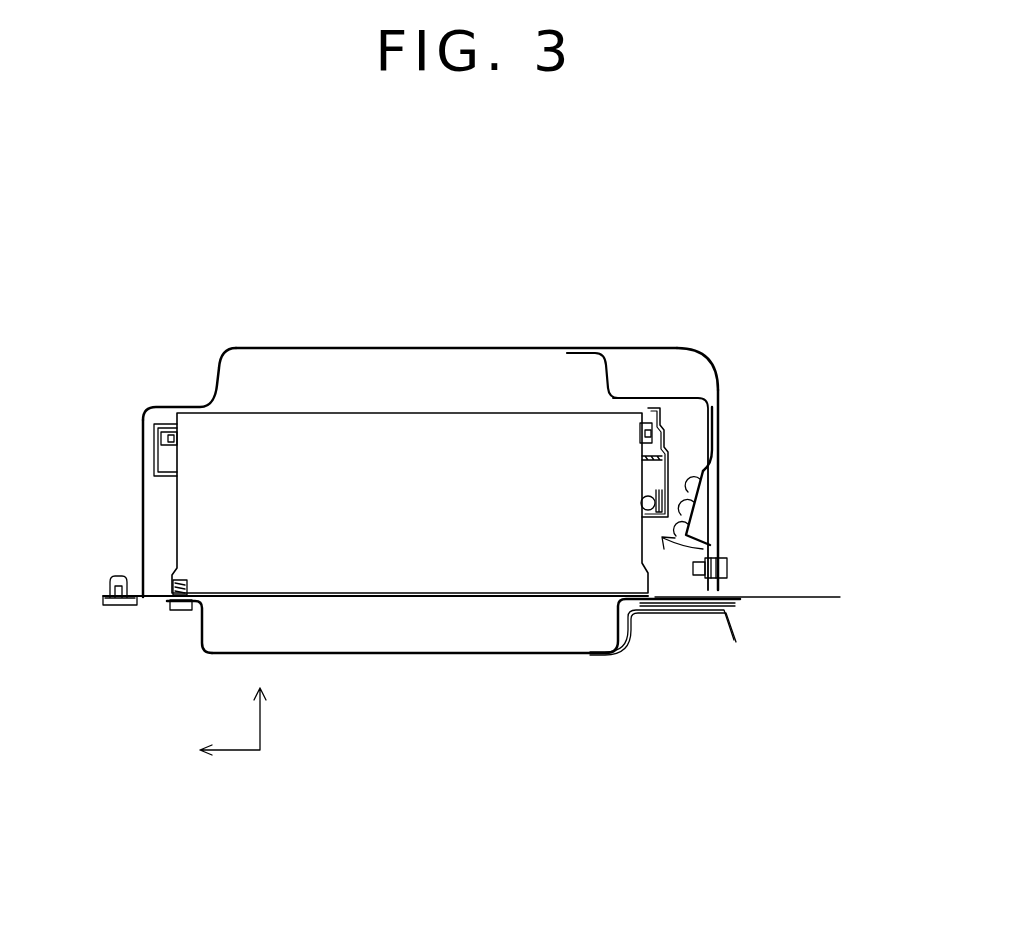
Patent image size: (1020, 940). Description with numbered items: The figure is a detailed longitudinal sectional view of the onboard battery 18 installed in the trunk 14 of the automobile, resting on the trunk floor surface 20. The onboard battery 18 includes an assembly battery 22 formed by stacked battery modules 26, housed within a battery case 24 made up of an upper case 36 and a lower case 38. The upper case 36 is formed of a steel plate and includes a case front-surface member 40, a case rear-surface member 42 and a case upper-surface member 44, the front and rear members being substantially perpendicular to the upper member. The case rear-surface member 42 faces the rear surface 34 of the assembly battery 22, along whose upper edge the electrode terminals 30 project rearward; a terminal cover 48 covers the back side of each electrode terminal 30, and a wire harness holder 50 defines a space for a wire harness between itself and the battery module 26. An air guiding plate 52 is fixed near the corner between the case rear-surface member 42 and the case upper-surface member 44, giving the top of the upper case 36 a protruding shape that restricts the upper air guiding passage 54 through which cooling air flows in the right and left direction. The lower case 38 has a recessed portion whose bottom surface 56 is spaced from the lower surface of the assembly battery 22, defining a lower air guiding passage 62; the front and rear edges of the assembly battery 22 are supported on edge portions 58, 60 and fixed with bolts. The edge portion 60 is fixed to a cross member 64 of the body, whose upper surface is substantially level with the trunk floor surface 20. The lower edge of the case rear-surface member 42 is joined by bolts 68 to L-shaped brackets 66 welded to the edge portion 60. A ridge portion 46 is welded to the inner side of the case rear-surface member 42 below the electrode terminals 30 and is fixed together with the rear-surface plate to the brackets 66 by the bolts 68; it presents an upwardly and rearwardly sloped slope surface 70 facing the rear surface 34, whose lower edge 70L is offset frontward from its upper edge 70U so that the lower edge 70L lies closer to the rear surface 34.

The trunk 14 is at (814, 373).
The onboard battery 18 is at (413, 288).
The trunk floor surface 20 is at (823, 598).
The assembly battery 22 is at (268, 410).
The battery case 24 is at (465, 496).
The battery module 26 is at (302, 440).
The electrode terminal 30 is at (660, 408).
The rear surface 34 is at (715, 550).
The upper case 36 is at (345, 345).
The lower case 38 is at (415, 655).
The case front-surface member 40 is at (143, 518).
The case rear-surface member 42 is at (720, 512).
The case upper-surface member 44 is at (460, 348).
The ridge portion 46 is at (702, 458).
The terminal cover 48 is at (690, 398).
The wire harness holder 50 is at (665, 420).
The air guiding plate 52 is at (605, 385).
The upper air guiding passage 54 is at (373, 396).
The bottom surface 56 is at (495, 645).
The edge portion 58 is at (150, 600).
The edge portion 60 is at (633, 603).
The lower air guiding passage 62 is at (385, 638).
The cross member 64 is at (628, 618).
The L-shaped bracket 66 is at (692, 600).
The bolt 68 is at (728, 566).
The slope surface 70 is at (687, 510).
The upper edge 70U is at (693, 486).
The lower edge 70L is at (680, 530).